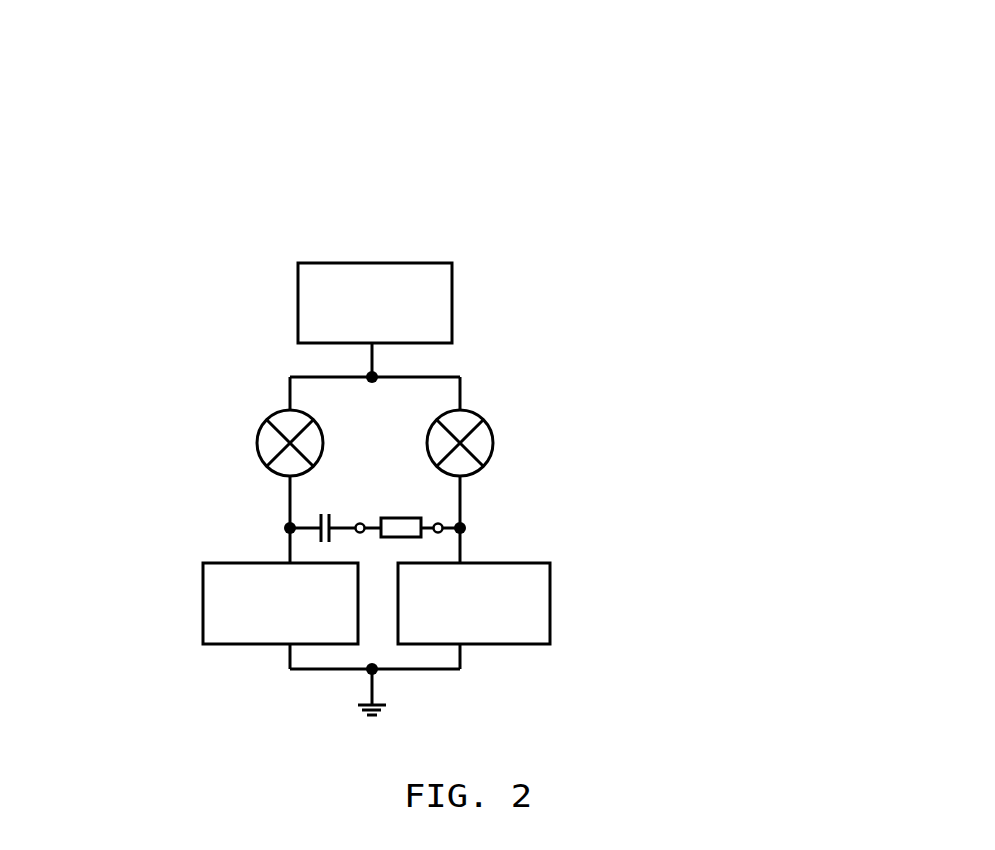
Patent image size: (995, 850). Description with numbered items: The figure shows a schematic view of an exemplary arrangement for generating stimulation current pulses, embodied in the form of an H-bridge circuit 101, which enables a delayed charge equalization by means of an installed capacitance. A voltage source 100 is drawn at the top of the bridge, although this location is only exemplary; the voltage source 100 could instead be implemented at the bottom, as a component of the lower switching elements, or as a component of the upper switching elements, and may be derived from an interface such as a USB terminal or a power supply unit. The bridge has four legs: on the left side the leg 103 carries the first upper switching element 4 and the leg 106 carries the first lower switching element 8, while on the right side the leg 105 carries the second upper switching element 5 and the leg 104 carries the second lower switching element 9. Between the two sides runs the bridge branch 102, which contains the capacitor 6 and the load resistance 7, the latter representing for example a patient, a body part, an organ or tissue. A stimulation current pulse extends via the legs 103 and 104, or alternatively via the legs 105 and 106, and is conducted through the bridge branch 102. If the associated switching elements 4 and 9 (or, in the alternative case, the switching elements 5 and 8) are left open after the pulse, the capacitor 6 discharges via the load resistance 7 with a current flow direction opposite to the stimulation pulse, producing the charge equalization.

The H-bridge circuit 101 is at (176, 233).
The voltage source 100 is at (379, 314).
The leg 103 is at (290, 387).
The switching element S1 4 is at (262, 438).
The leg 106 is at (289, 503).
The capacitor C 6 is at (288, 527).
The load resistance R 7 is at (403, 522).
The leg 105 is at (463, 388).
The switching element S2 5 is at (478, 440).
The bridge branch 102 is at (447, 525).
The leg 104 is at (465, 550).
The switching element IS1 8 is at (233, 622).
The switching element IS2 9 is at (525, 597).